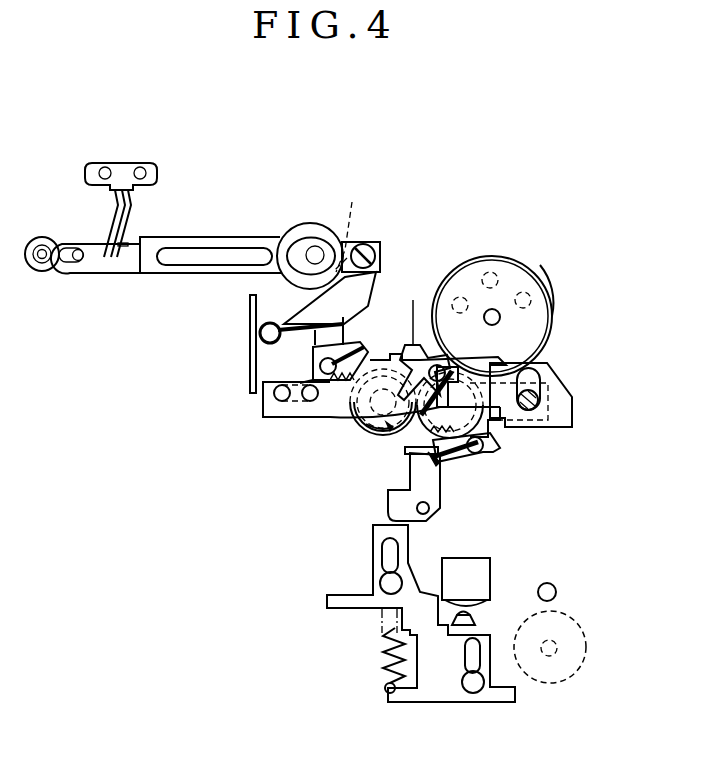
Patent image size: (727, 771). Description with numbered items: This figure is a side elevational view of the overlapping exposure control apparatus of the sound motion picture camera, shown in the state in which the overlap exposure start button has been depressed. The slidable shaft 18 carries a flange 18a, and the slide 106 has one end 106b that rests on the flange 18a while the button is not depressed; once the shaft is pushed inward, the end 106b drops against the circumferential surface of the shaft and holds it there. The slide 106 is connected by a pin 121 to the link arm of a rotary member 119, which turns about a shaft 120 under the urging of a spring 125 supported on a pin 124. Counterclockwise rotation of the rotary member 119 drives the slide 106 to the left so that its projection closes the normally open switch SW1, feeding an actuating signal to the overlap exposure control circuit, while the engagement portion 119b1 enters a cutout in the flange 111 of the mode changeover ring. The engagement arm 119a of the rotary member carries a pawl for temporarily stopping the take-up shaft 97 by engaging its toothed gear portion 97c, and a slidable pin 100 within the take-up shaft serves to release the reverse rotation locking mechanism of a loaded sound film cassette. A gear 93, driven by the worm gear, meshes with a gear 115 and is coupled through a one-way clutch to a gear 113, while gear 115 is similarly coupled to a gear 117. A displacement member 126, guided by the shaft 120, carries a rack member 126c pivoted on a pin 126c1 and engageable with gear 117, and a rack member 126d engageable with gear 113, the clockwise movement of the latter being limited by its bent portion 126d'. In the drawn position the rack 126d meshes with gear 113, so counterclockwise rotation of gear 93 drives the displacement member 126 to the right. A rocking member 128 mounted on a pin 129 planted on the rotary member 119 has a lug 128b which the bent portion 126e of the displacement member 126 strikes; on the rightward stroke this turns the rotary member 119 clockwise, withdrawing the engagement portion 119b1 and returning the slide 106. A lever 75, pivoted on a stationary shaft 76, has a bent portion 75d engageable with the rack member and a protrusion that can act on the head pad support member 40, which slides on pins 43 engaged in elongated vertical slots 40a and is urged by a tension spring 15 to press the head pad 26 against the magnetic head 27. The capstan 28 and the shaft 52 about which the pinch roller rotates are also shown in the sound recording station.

The slidable shaft 18 is at (42, 266).
The flange 18a is at (44, 238).
The slide 106 is at (222, 238).
The end of slide 106b is at (105, 265).
The normally open type switch SW1 is at (128, 215).
The flange 111 is at (312, 223).
The engagement portion 119b1 is at (358, 221).
The pin 121 is at (372, 246).
The rotary member 119 is at (363, 282).
The lug 128b is at (418, 360).
The rocking member 128 is at (405, 355).
The take-up shaft 97 is at (500, 272).
The gear 97c is at (535, 262).
The slidable pin 100 is at (500, 318).
The bent portion 126e is at (385, 350).
The rack member 126c is at (355, 360).
The spring 125 is at (273, 322).
The pin 124 is at (262, 335).
The pin 129 is at (442, 368).
The engagement arm 119a is at (555, 390).
The pin 126c1 is at (340, 377).
The shaft 120 is at (305, 400).
The gear 117 is at (378, 410).
The gear 115 is at (366, 433).
The bent portion 75d is at (410, 451).
The lever 75 is at (410, 483).
The gear 113 is at (468, 412).
The gear 93 is at (483, 430).
The rack member 126d is at (467, 476).
The displacement member 126 is at (490, 455).
The bent portion 126d' is at (459, 496).
The stationary shaft 76 is at (423, 515).
The elongated vertical slots 40a is at (390, 558).
The pins 43 is at (382, 583).
The magnetic head 27 is at (467, 605).
The capstan 28 is at (552, 585).
The head pad 26 is at (478, 620).
The tension spring 15 is at (383, 662).
The head pad support member 40 is at (432, 678).
The shaft 52 is at (575, 668).